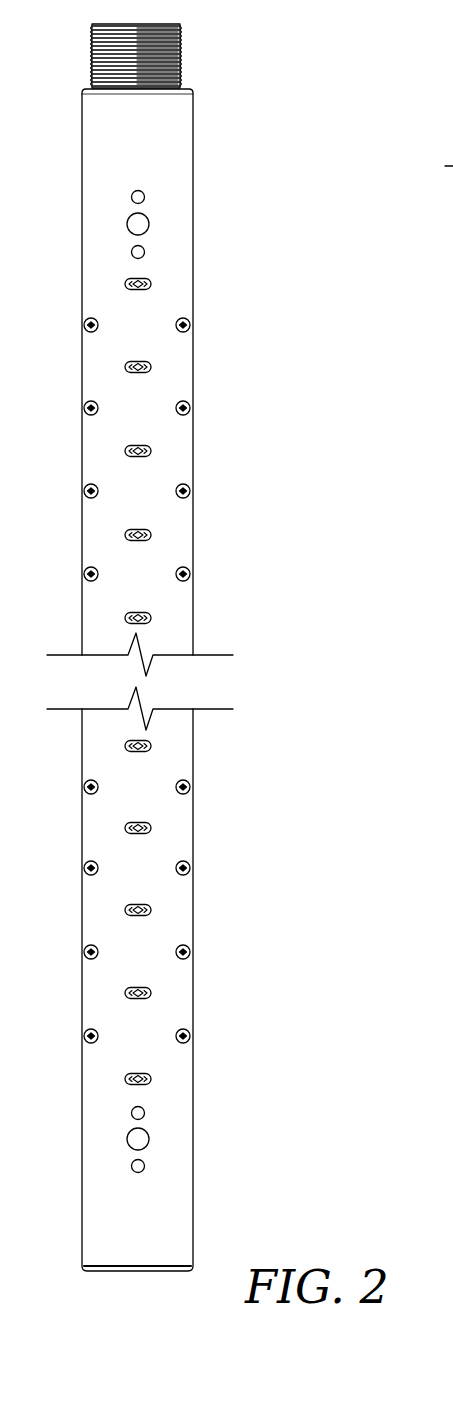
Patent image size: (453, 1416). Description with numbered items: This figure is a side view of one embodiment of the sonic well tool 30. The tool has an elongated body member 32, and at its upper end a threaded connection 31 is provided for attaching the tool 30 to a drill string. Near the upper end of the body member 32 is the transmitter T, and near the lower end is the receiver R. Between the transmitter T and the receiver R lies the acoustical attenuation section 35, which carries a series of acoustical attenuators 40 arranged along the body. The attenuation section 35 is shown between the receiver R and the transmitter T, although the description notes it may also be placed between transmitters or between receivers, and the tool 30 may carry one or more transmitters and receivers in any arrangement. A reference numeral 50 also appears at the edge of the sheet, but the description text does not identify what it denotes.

The perforated tubing string section / sensor pipe assembly 30 is at (187, 647).
The threaded pin connection 31 is at (181, 50).
The tubular body 32 is at (170, 259).
The perforated section 35 is at (187, 682).
The perforations 40 is at (86, 491).
The wellbore / casing 50 is at (432, 168).
The transmitter ports T is at (146, 222).
The receiver ports R is at (142, 1141).